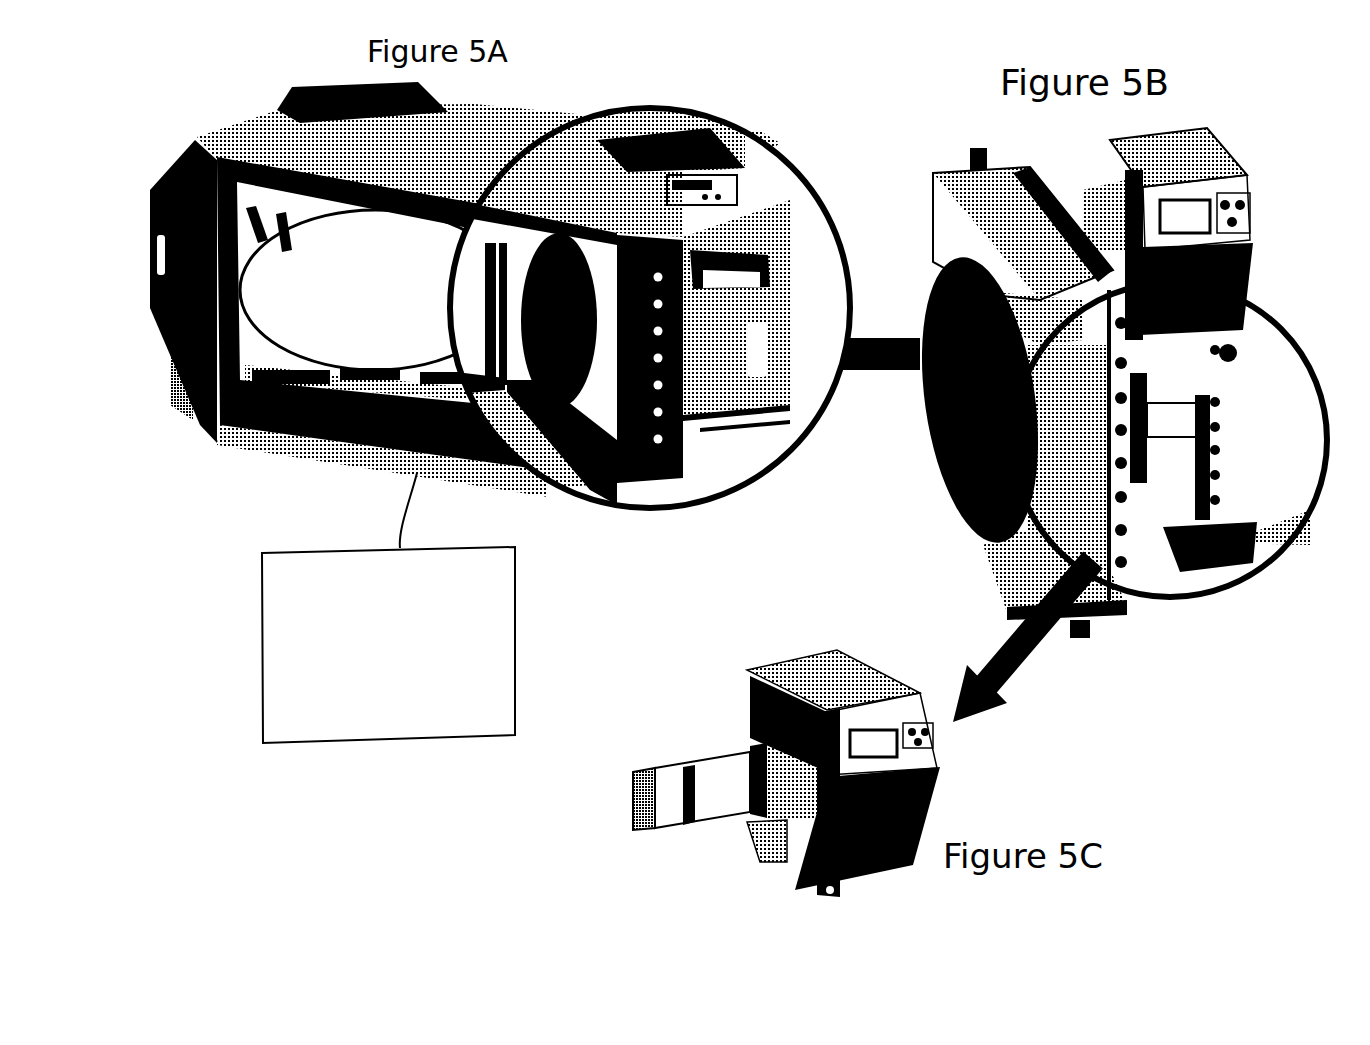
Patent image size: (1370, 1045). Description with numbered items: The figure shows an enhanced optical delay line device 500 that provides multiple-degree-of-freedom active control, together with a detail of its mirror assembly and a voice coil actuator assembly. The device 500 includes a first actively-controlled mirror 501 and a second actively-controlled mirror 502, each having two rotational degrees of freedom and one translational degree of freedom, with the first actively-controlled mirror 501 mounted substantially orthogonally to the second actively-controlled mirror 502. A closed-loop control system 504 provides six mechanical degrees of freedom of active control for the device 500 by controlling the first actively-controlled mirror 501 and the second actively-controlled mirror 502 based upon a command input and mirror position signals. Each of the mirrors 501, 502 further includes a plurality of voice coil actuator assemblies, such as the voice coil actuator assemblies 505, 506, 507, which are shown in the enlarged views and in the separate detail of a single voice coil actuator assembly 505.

In FIG. 5A, the enhanced optical delay line device 500 is at (118, 710).
In FIG. 5A, the first actively-controlled mirror 501 is at (197, 347).
In FIG. 5A, the second actively-controlled mirror 502 is at (560, 232).
In FIG. 5B, the second actively-controlled mirror 502 is at (938, 487).
In FIG. 5A, the closed-loop control system 504 is at (435, 742).
In FIG. 5B, the voice coil actuator assembly 505 is at (1189, 454).
In FIG. 5C, the voice coil actuator assembly 505 is at (973, 768).
In FIG. 5B, the voice coil actuator assembly 506 is at (1230, 172).
In FIG. 5B, the voice coil actuator assembly 507 is at (1260, 572).